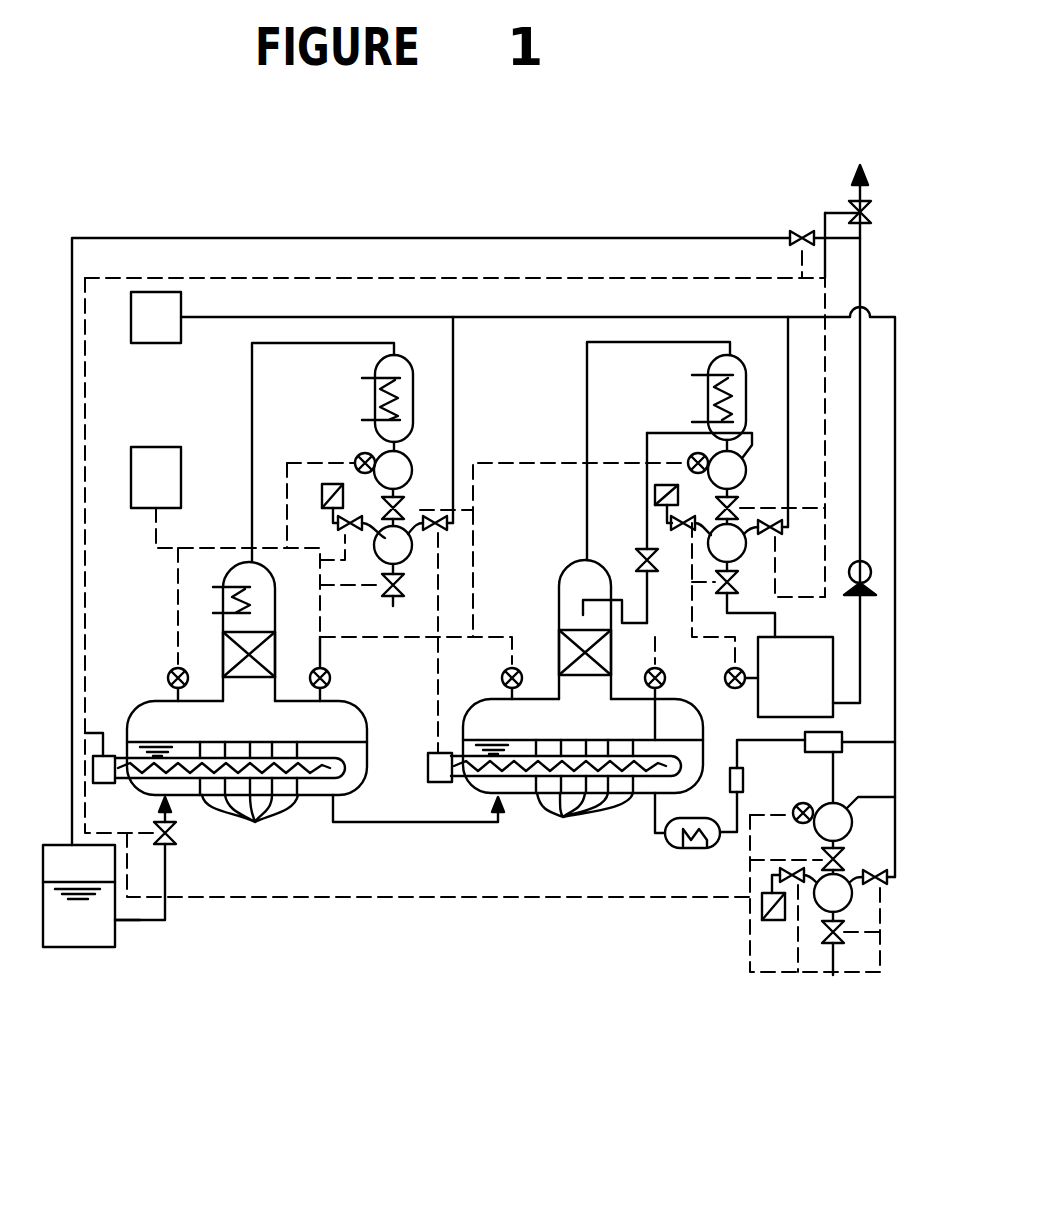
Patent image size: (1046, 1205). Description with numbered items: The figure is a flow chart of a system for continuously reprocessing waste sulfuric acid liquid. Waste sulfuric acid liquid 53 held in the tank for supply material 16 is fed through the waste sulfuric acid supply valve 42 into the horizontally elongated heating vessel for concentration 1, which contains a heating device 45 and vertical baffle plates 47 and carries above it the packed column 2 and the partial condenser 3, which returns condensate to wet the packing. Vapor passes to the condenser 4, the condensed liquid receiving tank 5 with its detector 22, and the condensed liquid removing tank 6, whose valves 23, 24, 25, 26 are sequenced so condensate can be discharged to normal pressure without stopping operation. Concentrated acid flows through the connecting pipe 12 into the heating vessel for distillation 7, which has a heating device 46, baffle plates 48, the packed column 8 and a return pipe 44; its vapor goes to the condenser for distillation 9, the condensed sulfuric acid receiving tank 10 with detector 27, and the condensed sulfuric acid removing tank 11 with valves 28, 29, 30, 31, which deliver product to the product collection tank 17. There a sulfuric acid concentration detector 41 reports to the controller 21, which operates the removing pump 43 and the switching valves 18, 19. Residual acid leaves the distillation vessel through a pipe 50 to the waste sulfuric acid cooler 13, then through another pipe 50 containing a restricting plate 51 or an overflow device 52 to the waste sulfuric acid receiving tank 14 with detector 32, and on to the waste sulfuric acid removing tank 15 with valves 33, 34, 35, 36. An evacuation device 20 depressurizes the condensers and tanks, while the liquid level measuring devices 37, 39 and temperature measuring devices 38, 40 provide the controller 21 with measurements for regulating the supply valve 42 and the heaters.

The heating vessel for concentration 1 is at (157, 728).
The packed column 2 is at (236, 658).
The partial condenser 3 is at (230, 600).
The condenser 4 is at (375, 398).
The condensed liquid receiving tank 5 is at (413, 468).
The condensed liquid removing tank 6 is at (403, 557).
The heating vessel for distillation 7 is at (483, 723).
The packed column 8 is at (573, 657).
The condenser for distillation 9 is at (708, 400).
The condensed sulfuric acid receiving tank 10 is at (752, 452).
The condensed sulfuric acid removing tank 11 is at (740, 556).
The connecting pipe 12 is at (382, 824).
The waste sulfuric acid cooler 13 is at (672, 842).
The waste sulfuric acid receiving tank 14 is at (842, 803).
The waste sulfuric acid removing tank 15 is at (848, 902).
The tank for supply material 16 is at (117, 935).
The product collection tank 17 is at (835, 710).
The switching valve 18 is at (790, 232).
The switching valve 19 is at (850, 205).
The evacuation device 20 is at (152, 300).
The controller 21 is at (153, 447).
The detector 22 is at (358, 457).
The valve 23 is at (404, 510).
The valve 24 is at (448, 523).
The valve 25 is at (338, 523).
The valve 26 is at (388, 594).
The detector 27 is at (690, 455).
The valve 28 is at (738, 508).
The valve 29 is at (782, 528).
The valve 30 is at (647, 533).
The valve 31 is at (715, 580).
The detector 32 is at (797, 822).
The valve 33 is at (844, 859).
The valve 34 is at (887, 878).
The valve 35 is at (770, 878).
The valve 36 is at (830, 945).
The liquid level measuring device 37 is at (167, 672).
The temperature measuring device 38 is at (334, 677).
The liquid level measuring device 39 is at (503, 671).
The temperature measuring device 40 is at (667, 678).
The sulfuric acid concentration detector 41 is at (729, 687).
The waste sulfuric acid supply valve 42 is at (176, 832).
The removing pump 43 is at (862, 596).
The return pipe 44 is at (655, 495).
The heating device 45 is at (138, 798).
The heating device 46 is at (473, 790).
The baffle plates 47 is at (250, 826).
The baffle plates 48 is at (584, 823).
The pipe 50 is at (738, 758).
The restricting plate 51 is at (743, 782).
The overflow device 52 is at (895, 738).
The waste sulfuric acid liquid 53 is at (76, 930).